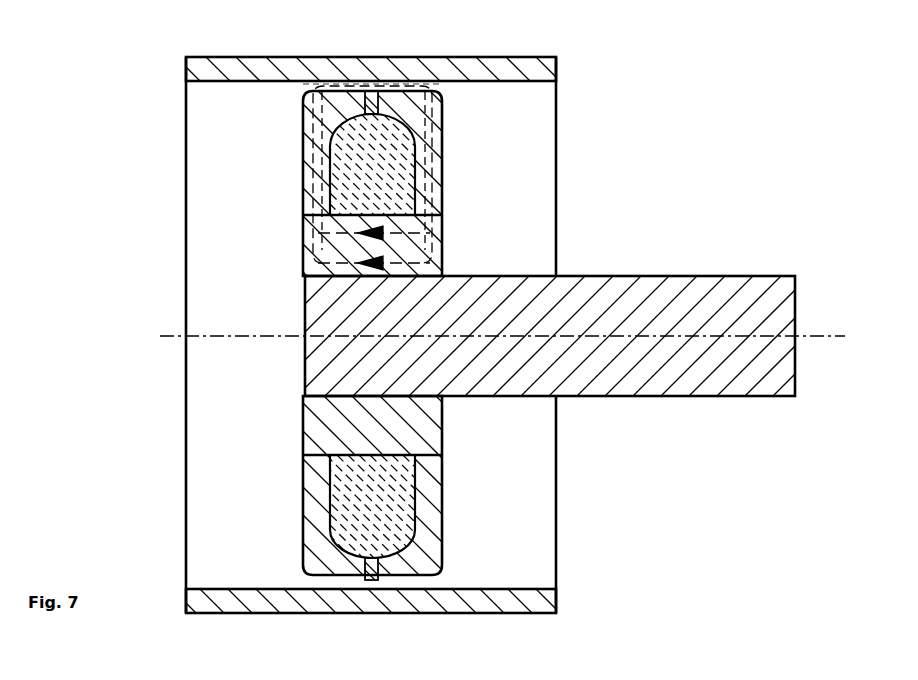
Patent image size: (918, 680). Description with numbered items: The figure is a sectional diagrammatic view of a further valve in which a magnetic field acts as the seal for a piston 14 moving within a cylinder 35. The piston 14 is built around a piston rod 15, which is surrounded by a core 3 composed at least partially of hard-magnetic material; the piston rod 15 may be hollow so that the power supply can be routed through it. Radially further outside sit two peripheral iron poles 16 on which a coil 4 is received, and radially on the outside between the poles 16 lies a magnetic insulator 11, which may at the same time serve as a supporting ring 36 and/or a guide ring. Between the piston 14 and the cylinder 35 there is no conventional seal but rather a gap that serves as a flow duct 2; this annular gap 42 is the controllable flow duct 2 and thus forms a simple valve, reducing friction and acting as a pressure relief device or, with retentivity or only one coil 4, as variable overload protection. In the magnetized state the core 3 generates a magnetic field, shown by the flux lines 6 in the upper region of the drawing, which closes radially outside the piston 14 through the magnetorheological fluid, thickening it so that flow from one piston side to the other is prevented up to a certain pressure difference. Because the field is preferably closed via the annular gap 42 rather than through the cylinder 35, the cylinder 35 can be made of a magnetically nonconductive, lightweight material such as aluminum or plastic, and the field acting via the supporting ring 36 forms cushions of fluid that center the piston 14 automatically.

The cylinder 35 is at (205, 67).
The supporting ring 36 is at (372, 84).
The magnetic insulator 11 is at (374, 86).
The flux lines 6 is at (411, 88).
The piston 14 is at (473, 147).
The flow duct 2 is at (302, 90).
The annular gap 42 is at (291, 99).
The iron poles 16 is at (305, 167).
The core 3 is at (325, 244).
The piston rod 15 is at (322, 304).
The coil 4 is at (383, 512).